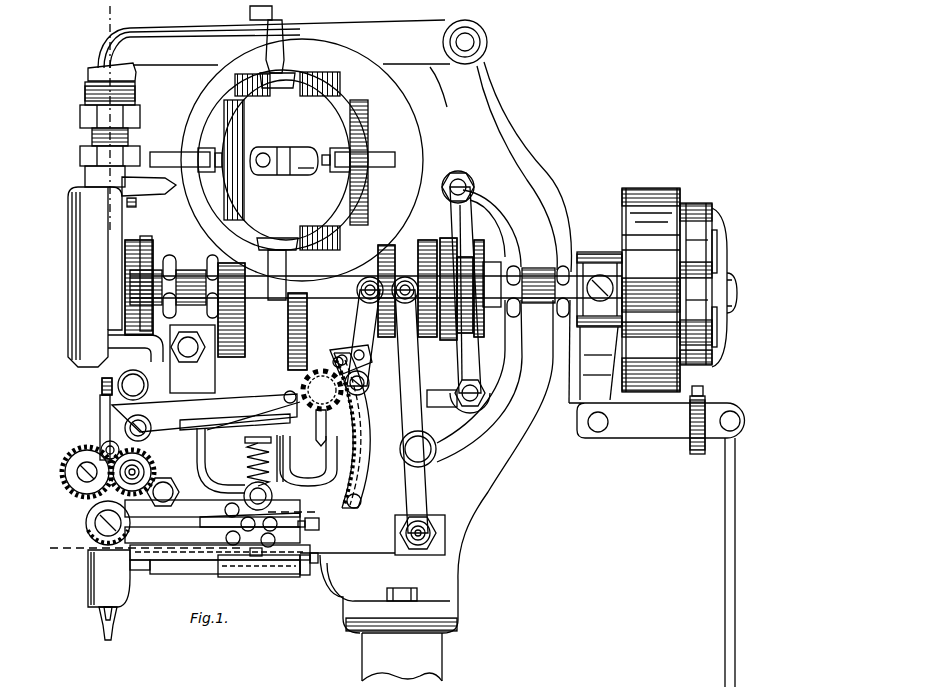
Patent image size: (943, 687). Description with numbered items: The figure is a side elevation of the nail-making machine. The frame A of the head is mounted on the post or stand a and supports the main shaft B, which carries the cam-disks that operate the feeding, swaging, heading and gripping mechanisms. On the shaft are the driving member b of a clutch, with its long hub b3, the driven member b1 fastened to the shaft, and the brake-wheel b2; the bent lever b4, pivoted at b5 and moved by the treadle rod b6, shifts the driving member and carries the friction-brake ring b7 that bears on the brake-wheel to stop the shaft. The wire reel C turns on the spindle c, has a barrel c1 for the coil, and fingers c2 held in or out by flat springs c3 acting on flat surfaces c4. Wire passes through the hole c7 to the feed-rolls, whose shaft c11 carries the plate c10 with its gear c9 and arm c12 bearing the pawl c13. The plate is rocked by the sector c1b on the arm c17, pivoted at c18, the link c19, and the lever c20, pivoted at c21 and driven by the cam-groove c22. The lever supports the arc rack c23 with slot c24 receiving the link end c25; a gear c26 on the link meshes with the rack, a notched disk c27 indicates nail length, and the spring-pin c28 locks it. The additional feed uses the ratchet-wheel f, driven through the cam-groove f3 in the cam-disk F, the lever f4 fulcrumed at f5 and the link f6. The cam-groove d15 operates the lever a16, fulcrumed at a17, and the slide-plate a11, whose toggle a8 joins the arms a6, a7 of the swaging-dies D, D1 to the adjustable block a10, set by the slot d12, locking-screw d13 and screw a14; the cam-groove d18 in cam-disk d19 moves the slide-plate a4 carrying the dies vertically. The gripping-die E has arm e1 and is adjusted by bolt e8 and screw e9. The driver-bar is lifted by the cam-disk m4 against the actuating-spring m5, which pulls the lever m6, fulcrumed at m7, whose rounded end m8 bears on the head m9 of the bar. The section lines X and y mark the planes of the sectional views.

The section line y y is at (108, 640).
The rounded head of the driver-bar m9 is at (100, 88).
The rounded end of the lever m8 is at (104, 63).
The cam-disk m4 is at (149, 204).
The lever m6 is at (290, 42).
The fulcrum of the lever m7 is at (488, 43).
The reel C is at (408, 134).
The barrel of the reel c1 is at (353, 112).
The spindle or post c is at (264, 152).
The fingers c2 is at (285, 32).
The flat spring c3 is at (292, 90).
The flat surfaces c4 is at (275, 92).
The main shaft B is at (376, 286).
The cam-groove d18 is at (240, 327).
The cam-disk d19 is at (246, 345).
The lever c20 is at (372, 318).
The cam-groove d15 is at (428, 248).
The cam-disk F is at (456, 289).
The cam-groove f3 is at (484, 252).
The cam-groove c22 is at (372, 275).
The ratchet-wheel f is at (468, 376).
The lever f4 is at (489, 352).
The fulcrum of the lever f5 is at (462, 174).
The link f6 is at (458, 393).
The fulcrum of the lever a17 is at (422, 458).
The lever a16 is at (430, 426).
The slide-plate a11 is at (394, 534).
The adjusting and holding screw a14 is at (320, 524).
The end of the link c25 is at (368, 380).
The gear c26 is at (304, 388).
The notched disk c27 is at (326, 420).
The spring bolt or pin c28 is at (258, 442).
The arc rack c23 is at (368, 430).
The slot c24 is at (362, 445).
The pivot of the lever c21 is at (362, 500).
The actuating-spring m5 is at (250, 462).
The link c19 is at (219, 408).
The pivot of the arm c18 is at (140, 385).
The sector c1b is at (143, 418).
The hole c7 is at (100, 386).
The arm c17 is at (104, 420).
The arm c12 is at (100, 448).
The pawl c13 is at (75, 478).
The feed-roll shaft c11 is at (142, 468).
The plate c10 is at (98, 490).
The gear c9 is at (105, 508).
The arm of the swaging-die a6 is at (212, 510).
The arm of the swaging-die a7 is at (212, 536).
The toggle a8 is at (232, 524).
The section line x x X is at (180, 529).
The swaging-die D is at (88, 553).
The gripping-die E is at (98, 568).
The swaging-die D1 is at (135, 562).
The arm of the gripping-die e1 is at (181, 565).
The slide-plate a4 is at (228, 576).
The adjustable block a10 is at (258, 576).
The locking and guiding bolt e8 is at (290, 578).
The adjusting and holding screw e9 is at (306, 572).
The locking-screw d13 is at (268, 512).
The slot d12 is at (292, 515).
The frame A is at (502, 474).
The post or stand a is at (444, 645).
The driving member of the clutch b is at (642, 190).
The driven member of the clutch b1 is at (690, 203).
The brake-wheel b2 is at (729, 265).
The friction-brake ring b7 is at (718, 345).
The long hub b3 is at (599, 317).
The bent lever b4 is at (648, 441).
The pivot of the bent lever b5 is at (598, 434).
The rod b6 is at (736, 520).